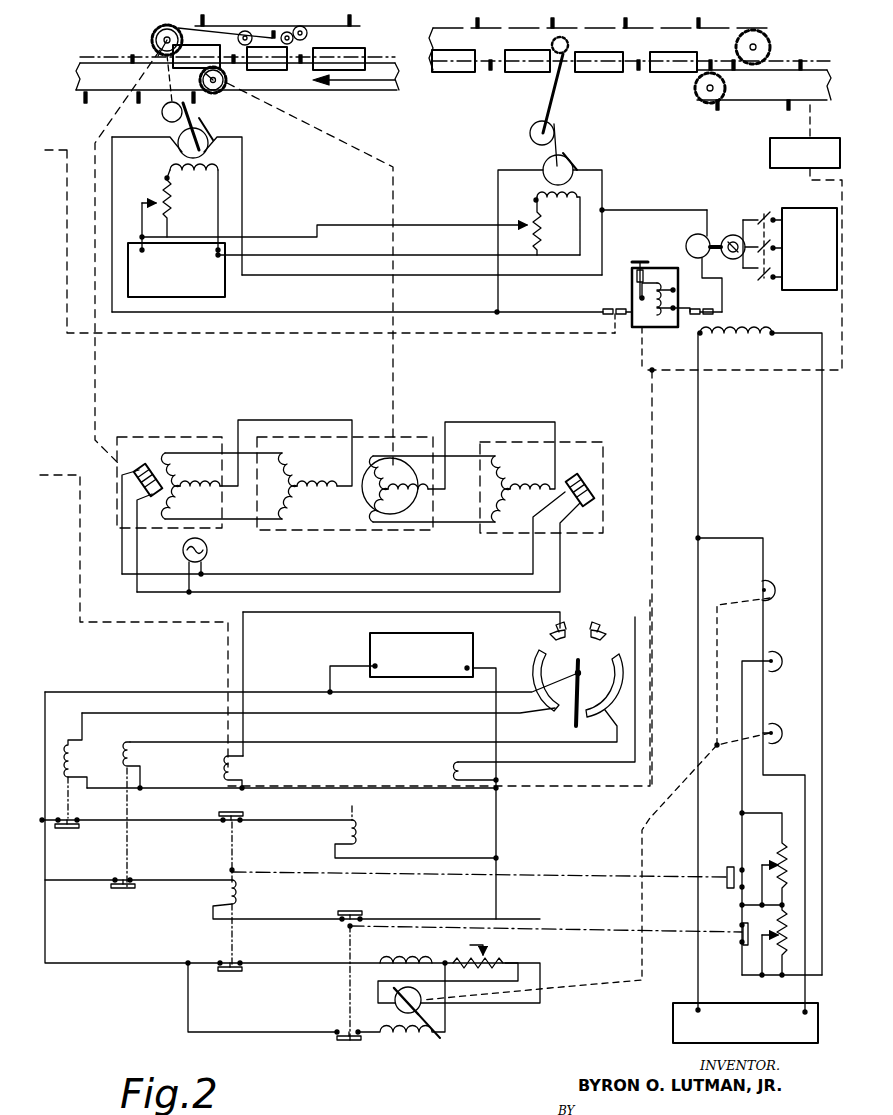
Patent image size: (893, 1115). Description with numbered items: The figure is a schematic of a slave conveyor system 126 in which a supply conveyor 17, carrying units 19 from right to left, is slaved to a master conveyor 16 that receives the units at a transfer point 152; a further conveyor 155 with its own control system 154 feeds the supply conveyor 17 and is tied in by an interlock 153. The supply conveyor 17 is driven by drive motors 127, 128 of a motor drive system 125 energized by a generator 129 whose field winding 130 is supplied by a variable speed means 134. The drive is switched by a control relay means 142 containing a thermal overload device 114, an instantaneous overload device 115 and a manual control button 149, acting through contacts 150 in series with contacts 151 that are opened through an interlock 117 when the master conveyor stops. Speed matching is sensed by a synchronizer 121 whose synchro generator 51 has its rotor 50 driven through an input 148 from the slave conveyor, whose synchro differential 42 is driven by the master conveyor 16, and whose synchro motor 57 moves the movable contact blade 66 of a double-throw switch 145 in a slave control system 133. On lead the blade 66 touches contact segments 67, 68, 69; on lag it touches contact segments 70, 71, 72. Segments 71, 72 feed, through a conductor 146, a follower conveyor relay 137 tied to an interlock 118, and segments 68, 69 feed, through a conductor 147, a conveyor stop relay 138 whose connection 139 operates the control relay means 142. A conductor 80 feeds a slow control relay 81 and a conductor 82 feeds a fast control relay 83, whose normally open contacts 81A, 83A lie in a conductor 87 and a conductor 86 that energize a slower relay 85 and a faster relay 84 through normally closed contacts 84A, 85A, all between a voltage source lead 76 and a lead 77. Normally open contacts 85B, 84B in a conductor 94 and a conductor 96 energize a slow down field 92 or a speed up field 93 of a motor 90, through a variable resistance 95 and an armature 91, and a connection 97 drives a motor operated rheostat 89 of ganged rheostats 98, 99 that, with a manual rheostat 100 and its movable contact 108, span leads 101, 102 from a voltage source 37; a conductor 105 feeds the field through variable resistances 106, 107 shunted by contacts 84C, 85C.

The master conveyor 16 is at (158, 110).
The supply conveyor 17 is at (216, 30).
The units 19 is at (525, 70).
The voltage source 37 is at (673, 1030).
The synchro differential 42 is at (316, 437).
The rotor 50 is at (147, 463).
The synchro generator 51 is at (185, 437).
The synchro motor 57 is at (603, 442).
The movable contact blade 66 is at (604, 685).
The contact segment 67 is at (607, 708).
The contact segment 68 is at (606, 637).
The contact segment 69 is at (598, 633).
The contact segment 70 is at (540, 669).
The contact segment 71 is at (550, 649).
The contact segment 72 is at (555, 633).
The voltage source lead 76 is at (45, 848).
The lead 77 is at (494, 823).
The conductor 80 is at (322, 742).
The slow control relay 81 is at (132, 751).
The normally open contacts 81A is at (131, 880).
The conductor 82 is at (356, 713).
The fast control relay 83 is at (71, 764).
The normally open contacts 83A is at (73, 818).
The faster relay 84 is at (358, 830).
The normally closed contact 84A is at (350, 923).
The normally open contacts 84B is at (338, 1032).
The contacts 84C is at (738, 924).
The slower relay 85 is at (236, 891).
The normally closed contact 85A is at (245, 819).
The normally open contacts 85B is at (230, 960).
The contacts 85C is at (738, 864).
The conductor 86 is at (178, 820).
The conductor 87 is at (76, 880).
The motor operated rheostat 89 is at (778, 721).
The motor 90 is at (440, 1038).
The armature 91 is at (400, 1008).
The slow down field 92 is at (408, 962).
The speed up field 93 is at (408, 1034).
The conductor 94 is at (327, 962).
The variable resistance 95 is at (490, 958).
The conductor 96 is at (302, 1035).
The connection 97 is at (616, 987).
The rheostat 98 is at (770, 582).
The rheostat 99 is at (779, 740).
The manual rheostat 100 is at (776, 672).
The lead 101 is at (695, 1005).
The lead 102 is at (802, 998).
The conductor 105 is at (822, 506).
The variable resistance 106 is at (780, 933).
The variable resistance 107 is at (782, 850).
The movable contact 108 is at (768, 652).
The thermal overload device 114 is at (677, 290).
The instantaneous overload device 115 is at (660, 327).
The interlock 117 is at (340, 334).
The interlock 118 is at (156, 623).
The synchronizer 121 is at (351, 508).
The motor drive system 125 is at (272, 260).
The slave conveyor system 126 is at (377, 27).
The drive motor 127 is at (216, 130).
The drive motor 128 is at (566, 154).
The generator 129 is at (702, 236).
The field winding 130 is at (762, 327).
The slave control system 133 is at (180, 663).
The variable speed means 134 is at (755, 672).
The follower conveyor relay 137 is at (226, 767).
The conveyor stop relay 138 is at (456, 766).
The connection 139 is at (562, 788).
The control relay means 142 is at (676, 244).
The double-throw switch 145 is at (577, 690).
The conductor 146 is at (306, 614).
The conductor 147 is at (572, 762).
The input 148 is at (93, 380).
The manual control button 149 is at (640, 262).
The contacts 150 is at (713, 319).
The contacts 151 is at (602, 309).
The transfer point 152 is at (192, 36).
The interlock 153 is at (764, 373).
The control system 154 is at (770, 144).
The conveyor 155 is at (778, 100).